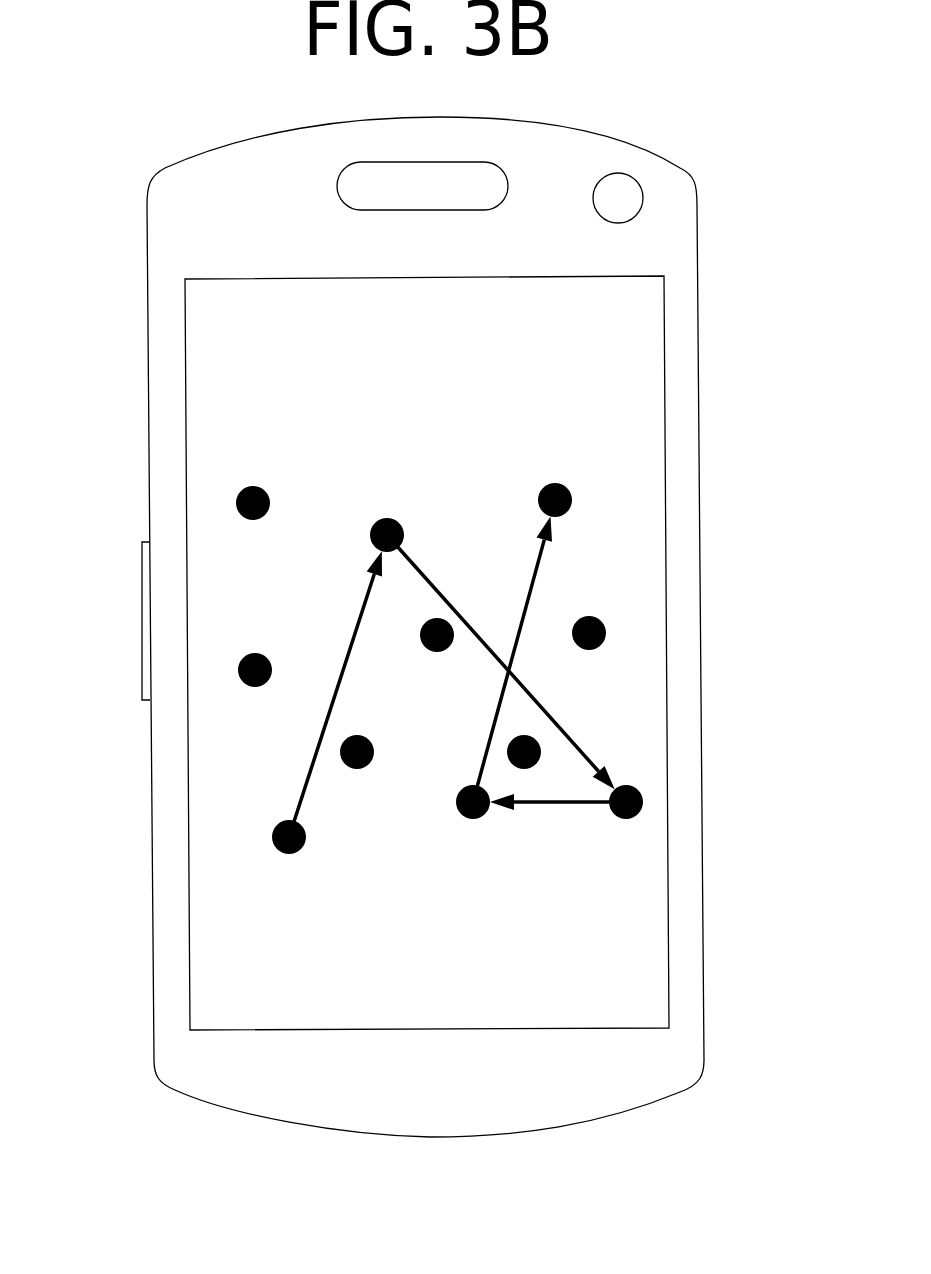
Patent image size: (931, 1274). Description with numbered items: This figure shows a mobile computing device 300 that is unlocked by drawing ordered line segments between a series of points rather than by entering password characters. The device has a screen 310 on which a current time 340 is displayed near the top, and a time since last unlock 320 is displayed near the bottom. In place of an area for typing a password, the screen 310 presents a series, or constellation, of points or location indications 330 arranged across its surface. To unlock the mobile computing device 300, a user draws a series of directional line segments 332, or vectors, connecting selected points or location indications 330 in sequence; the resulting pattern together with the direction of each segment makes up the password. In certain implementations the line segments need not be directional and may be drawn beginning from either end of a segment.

The mobile computing device 300 is at (122, 129).
The screen 310 is at (180, 368).
The current time 340 is at (603, 383).
The points or location indications 330 is at (607, 659).
The directional line segments 332 is at (297, 751).
The time since last unlock 320 is at (508, 953).